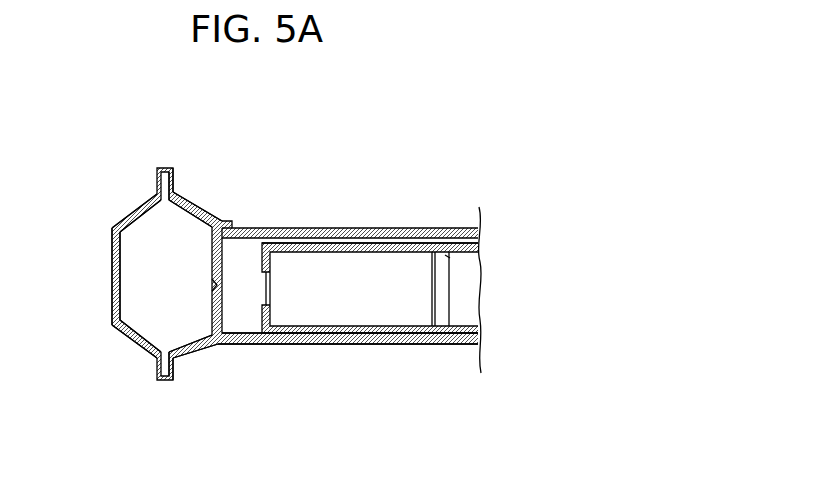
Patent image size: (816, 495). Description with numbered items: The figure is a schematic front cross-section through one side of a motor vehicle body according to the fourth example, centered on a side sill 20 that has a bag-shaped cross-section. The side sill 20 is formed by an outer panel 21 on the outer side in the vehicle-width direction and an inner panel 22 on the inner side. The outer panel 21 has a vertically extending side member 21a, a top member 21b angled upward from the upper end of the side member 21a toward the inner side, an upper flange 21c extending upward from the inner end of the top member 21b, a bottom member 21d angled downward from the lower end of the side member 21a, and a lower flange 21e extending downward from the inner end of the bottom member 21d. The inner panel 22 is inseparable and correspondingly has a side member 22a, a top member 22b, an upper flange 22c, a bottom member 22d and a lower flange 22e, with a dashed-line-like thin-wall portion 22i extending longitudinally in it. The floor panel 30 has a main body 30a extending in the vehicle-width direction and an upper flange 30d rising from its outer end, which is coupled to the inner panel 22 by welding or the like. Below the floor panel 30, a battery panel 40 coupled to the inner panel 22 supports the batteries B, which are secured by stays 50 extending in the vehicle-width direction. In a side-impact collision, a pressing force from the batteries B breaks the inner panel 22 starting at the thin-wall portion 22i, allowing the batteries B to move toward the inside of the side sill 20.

The side sill 20 is at (116, 353).
The outer panel 21 is at (113, 224).
The side member 21a is at (112, 260).
The top member 21b is at (137, 208).
The upper flange 21c is at (155, 192).
The bottom member 21d is at (143, 352).
The lower flange 21e is at (156, 379).
The inner panel 22 is at (258, 147).
The side member 22a is at (278, 340).
The top member 22b is at (205, 210).
The upper flange 22c is at (173, 178).
The bottom member 22d is at (183, 355).
The lower flange 22e is at (173, 380).
The thin-wall portion 22i is at (218, 285).
The floor panel 30 is at (388, 228).
The main body 30a is at (348, 208).
The upper flange 30d is at (233, 227).
The battery panel 40 is at (405, 343).
The stay 50 is at (423, 273).
The battery B is at (459, 272).